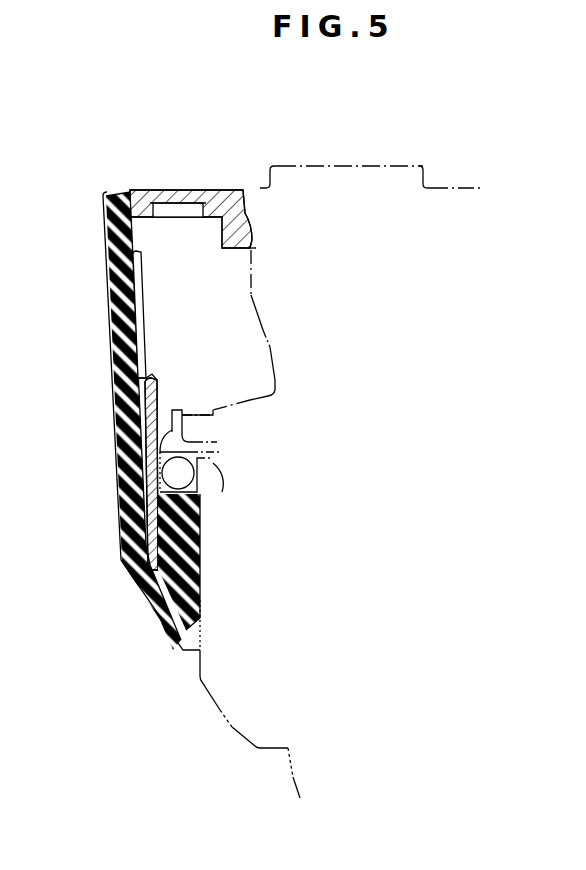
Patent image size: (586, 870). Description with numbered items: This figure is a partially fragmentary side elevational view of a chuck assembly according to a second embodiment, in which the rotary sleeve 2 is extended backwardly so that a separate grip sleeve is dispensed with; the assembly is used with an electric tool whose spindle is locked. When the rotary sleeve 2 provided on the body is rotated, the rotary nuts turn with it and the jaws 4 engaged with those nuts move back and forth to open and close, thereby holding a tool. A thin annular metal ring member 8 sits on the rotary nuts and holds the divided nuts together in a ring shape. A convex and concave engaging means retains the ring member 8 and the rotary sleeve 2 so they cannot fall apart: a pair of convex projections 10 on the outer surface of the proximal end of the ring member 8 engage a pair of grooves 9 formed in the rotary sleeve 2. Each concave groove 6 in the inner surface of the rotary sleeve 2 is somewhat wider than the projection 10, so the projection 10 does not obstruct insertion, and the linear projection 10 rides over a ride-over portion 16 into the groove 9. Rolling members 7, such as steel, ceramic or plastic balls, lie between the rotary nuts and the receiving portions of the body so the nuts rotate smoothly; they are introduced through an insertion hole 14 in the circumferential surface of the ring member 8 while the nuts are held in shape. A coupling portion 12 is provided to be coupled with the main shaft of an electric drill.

The rotary sleeve 2 is at (102, 210).
The jaws 4 is at (297, 780).
The concave groove 6 is at (144, 298).
The rolling members 7 is at (123, 534).
The ring member 8 is at (120, 438).
The grooves 9 is at (150, 378).
The projections 10 is at (133, 383).
The coupling portion 12 is at (400, 162).
The insertion hole 14 is at (172, 492).
The ride-over portion 16 is at (143, 368).